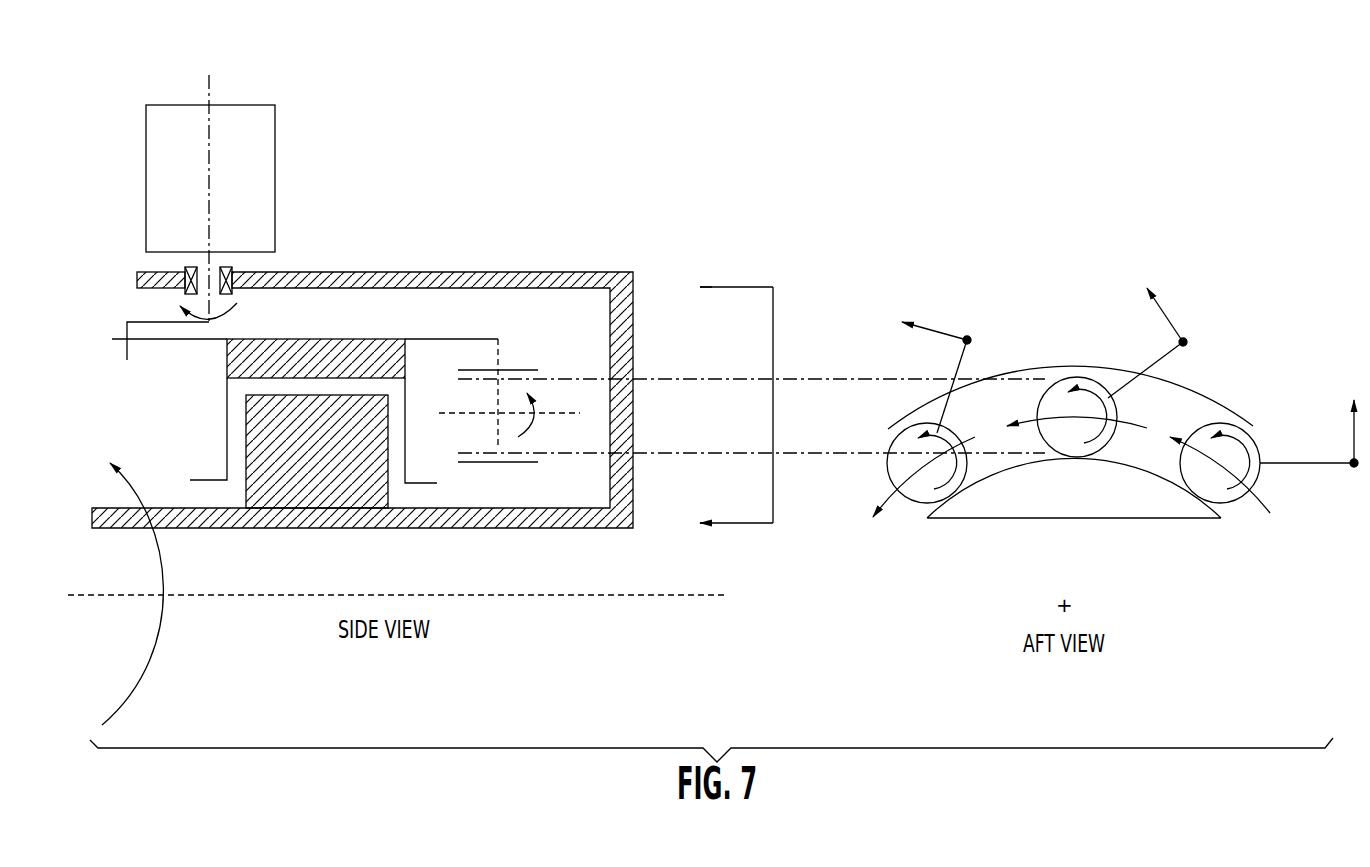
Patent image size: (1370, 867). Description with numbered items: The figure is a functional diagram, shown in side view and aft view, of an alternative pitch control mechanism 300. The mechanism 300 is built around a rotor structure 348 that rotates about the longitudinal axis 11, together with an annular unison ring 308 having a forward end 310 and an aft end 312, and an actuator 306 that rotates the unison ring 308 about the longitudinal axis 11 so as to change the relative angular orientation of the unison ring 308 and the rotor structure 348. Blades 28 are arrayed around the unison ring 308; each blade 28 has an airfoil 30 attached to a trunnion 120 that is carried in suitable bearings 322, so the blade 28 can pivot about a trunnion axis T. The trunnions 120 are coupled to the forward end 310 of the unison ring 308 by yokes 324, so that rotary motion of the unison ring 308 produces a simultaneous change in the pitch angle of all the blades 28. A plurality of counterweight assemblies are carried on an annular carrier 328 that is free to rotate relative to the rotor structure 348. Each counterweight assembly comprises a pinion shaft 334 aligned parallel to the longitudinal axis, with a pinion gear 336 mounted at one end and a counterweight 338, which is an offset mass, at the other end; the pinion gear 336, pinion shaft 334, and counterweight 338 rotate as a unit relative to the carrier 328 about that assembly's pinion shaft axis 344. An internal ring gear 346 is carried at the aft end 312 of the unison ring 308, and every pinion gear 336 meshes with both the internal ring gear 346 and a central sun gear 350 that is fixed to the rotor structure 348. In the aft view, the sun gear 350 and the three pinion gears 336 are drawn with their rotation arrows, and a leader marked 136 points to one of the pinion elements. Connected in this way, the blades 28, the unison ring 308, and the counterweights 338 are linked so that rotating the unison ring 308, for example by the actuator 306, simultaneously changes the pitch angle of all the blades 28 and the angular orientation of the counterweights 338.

The longitudinal axis 11 is at (607, 596).
The blade 28 is at (290, 152).
The airfoil 30 is at (178, 149).
The trunnion axis T is at (212, 92).
The trunnion 120 is at (212, 258).
The pitch control mechanism 300 is at (467, 157).
The actuator 306 is at (222, 362).
The unison ring 308 is at (313, 339).
The forward end 310 is at (190, 341).
The aft end 312 is at (458, 339).
The bearings 322 is at (238, 297).
The yoke 324 is at (157, 322).
The carrier 328 is at (903, 495).
The pinion shaft 334 is at (530, 420).
The pinion gear 336 is at (485, 453).
The counterweight 338 is at (967, 340).
The pinion shaft axis 344 is at (470, 413).
The internal ring gear 346 is at (520, 370).
The rotor structure 348 is at (187, 530).
The sun gear 350 is at (520, 462).
The gear element 136 is at (890, 466).